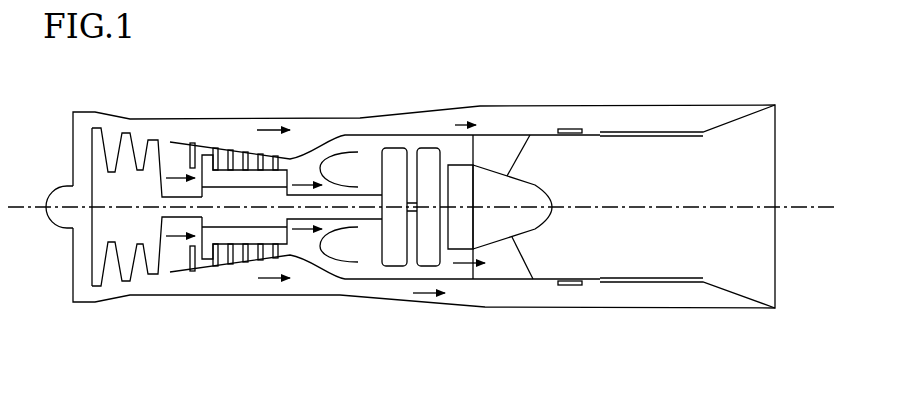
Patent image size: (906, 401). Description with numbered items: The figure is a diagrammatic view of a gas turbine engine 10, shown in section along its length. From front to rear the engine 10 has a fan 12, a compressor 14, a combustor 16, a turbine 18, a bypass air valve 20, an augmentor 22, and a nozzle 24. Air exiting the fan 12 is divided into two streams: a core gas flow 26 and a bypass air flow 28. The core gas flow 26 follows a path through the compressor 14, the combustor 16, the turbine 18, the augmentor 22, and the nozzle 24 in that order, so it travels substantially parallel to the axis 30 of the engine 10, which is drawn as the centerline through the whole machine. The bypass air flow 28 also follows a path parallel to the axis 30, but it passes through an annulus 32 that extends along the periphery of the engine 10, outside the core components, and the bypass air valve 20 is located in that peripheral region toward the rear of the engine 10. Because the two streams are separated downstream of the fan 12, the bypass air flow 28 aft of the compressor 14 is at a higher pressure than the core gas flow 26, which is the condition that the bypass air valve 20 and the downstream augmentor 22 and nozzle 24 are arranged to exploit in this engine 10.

The gas turbine engine 10 is at (566, 79).
The fan 12 is at (92, 138).
The compressor 14 is at (213, 147).
The combustor 16 is at (332, 157).
The turbine 18 is at (393, 150).
The bypass air valve 20 is at (575, 129).
The augmentor 22 is at (552, 225).
The nozzle 24 is at (733, 290).
The core gas flow 26 is at (176, 142).
The bypass air flow 28 is at (260, 130).
The axis 30 is at (790, 207).
The annulus 32 is at (502, 128).